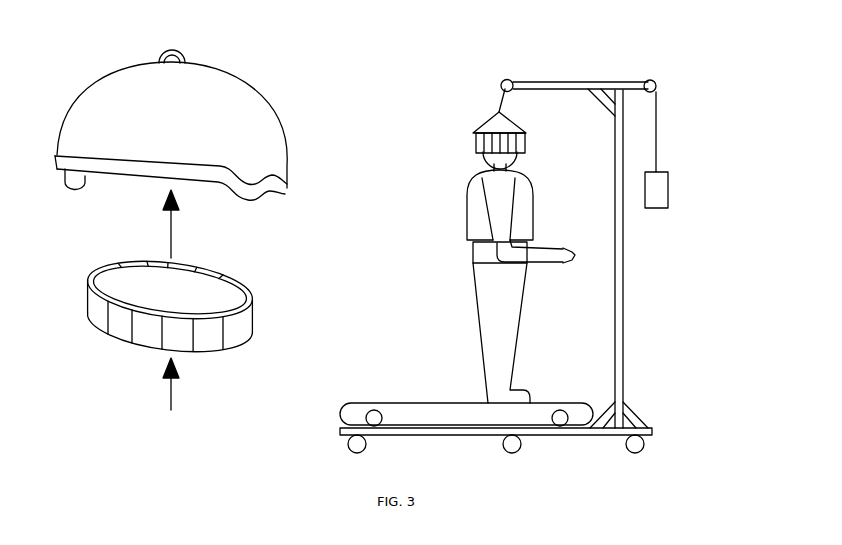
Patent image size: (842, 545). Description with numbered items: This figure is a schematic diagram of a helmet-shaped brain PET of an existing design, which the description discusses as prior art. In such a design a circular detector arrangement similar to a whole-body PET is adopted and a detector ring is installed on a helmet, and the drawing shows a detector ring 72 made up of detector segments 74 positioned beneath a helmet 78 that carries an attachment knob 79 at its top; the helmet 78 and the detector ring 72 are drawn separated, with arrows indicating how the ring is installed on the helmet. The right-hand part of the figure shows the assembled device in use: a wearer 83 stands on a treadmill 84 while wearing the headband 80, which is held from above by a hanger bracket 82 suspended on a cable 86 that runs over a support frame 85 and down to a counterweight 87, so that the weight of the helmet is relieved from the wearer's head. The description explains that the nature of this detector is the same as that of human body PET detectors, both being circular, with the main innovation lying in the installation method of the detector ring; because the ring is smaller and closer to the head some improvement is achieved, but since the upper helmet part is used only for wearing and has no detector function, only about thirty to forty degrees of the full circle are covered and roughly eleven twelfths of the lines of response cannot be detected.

The electrode band ring 72 is at (183, 316).
The electrodes 74 is at (120, 324).
The helmet 78 is at (171, 131).
The attachment knob 79 is at (177, 50).
The headband 80 is at (477, 143).
The hanger bracket 82 is at (494, 132).
The user 83 is at (467, 212).
The treadmill 84 is at (410, 403).
The support frame 85 is at (578, 82).
The cable 86 is at (486, 116).
The counterweight 87 is at (668, 188).